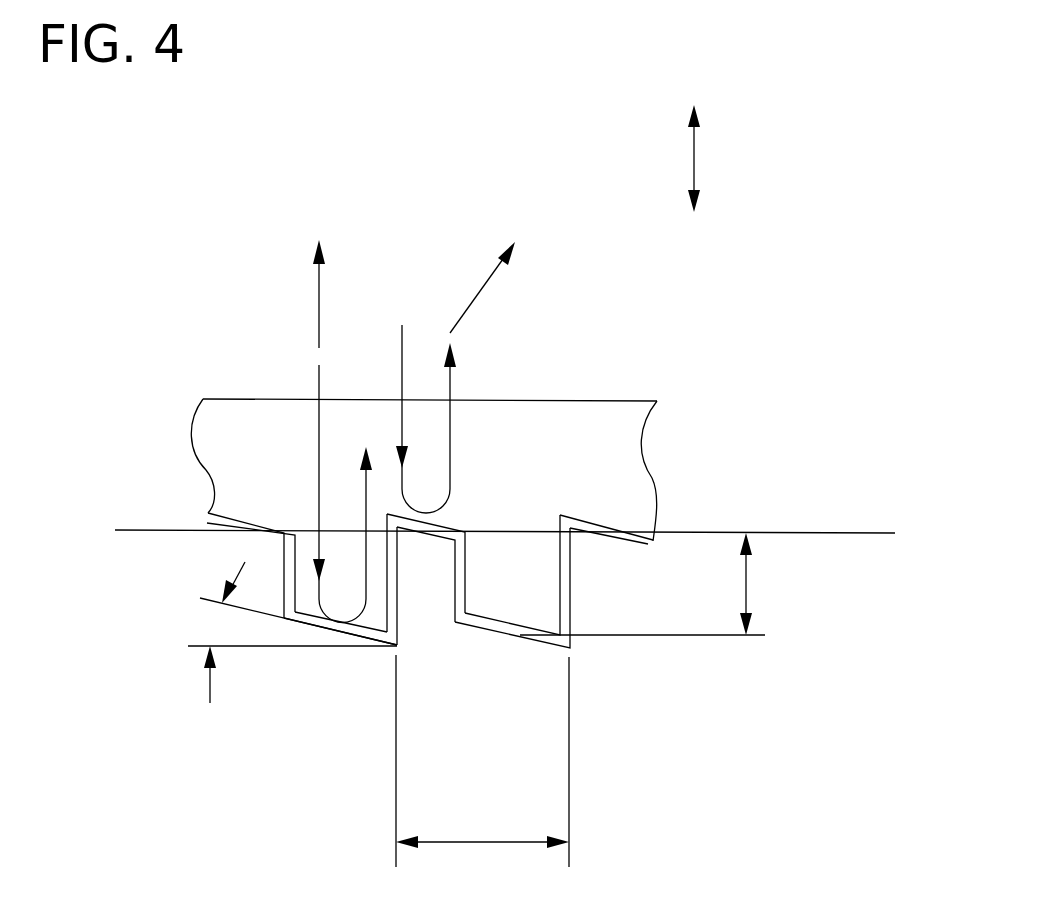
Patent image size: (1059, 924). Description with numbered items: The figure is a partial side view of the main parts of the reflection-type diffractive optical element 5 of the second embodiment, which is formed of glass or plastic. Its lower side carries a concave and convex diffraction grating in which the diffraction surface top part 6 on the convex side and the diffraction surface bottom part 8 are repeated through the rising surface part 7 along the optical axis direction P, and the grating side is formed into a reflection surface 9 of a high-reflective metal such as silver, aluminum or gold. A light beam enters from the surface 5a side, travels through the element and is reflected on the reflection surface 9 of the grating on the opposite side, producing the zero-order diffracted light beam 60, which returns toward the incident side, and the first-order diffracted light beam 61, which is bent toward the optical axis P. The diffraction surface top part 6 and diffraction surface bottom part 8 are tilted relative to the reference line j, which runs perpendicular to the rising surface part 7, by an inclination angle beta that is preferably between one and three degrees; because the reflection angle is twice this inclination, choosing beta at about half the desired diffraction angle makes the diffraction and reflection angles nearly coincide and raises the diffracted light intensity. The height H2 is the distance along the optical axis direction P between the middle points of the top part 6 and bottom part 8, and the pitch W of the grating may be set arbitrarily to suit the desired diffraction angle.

The diffractive optical element 5 is at (608, 399).
The surface 5a is at (225, 398).
The diffraction surface top part 6 is at (332, 633).
The rising surface part 7 is at (398, 603).
The diffraction surface bottom part 8 is at (437, 539).
The reflection surface 9 is at (607, 538).
The 0-order diffracted light beam 60 is at (317, 283).
The 1-order diffracted light beam 61 is at (483, 292).
The reference line j is at (133, 530).
The optical axis direction P is at (705, 158).
The height H2 is at (655, 584).
The pitch W is at (482, 765).
The inclination angle beta is at (287, 632).